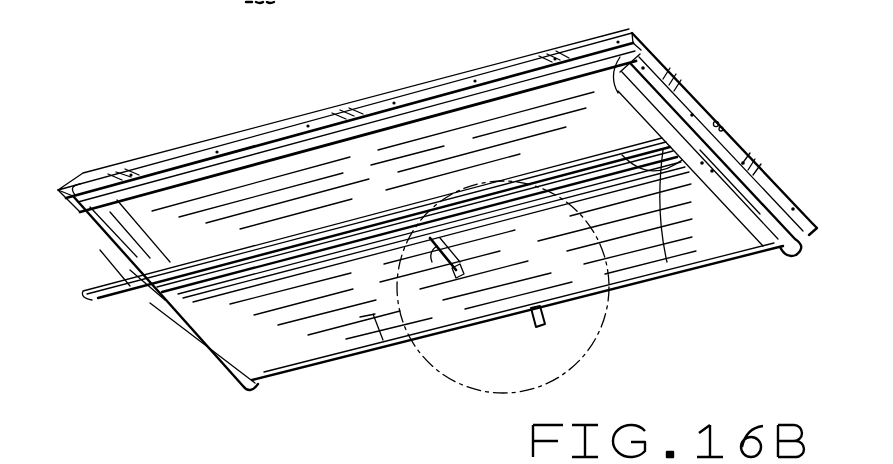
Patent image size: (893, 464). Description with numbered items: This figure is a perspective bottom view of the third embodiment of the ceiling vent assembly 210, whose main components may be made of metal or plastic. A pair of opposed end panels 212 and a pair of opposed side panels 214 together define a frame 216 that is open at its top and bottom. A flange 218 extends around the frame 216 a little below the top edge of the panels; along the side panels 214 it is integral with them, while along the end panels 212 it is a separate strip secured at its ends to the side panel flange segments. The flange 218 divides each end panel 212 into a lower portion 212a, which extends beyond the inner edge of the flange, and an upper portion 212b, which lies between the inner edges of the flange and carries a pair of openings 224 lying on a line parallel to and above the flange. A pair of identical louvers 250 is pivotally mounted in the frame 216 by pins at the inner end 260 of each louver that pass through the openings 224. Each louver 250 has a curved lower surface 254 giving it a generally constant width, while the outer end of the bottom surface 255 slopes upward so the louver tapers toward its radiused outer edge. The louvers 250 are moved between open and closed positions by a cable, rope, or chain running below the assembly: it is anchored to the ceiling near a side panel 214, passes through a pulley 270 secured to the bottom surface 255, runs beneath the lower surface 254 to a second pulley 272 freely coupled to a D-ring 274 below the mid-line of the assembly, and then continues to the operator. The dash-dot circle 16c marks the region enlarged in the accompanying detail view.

The ceiling vent assembly 210 is at (391, 76).
The end panel 212 is at (668, 112).
The lower portion of end panel 212a is at (772, 218).
The upper portion of end panel 212b is at (657, 65).
The side panel 214 is at (303, 131).
The frame 216 is at (542, 55).
The flange 218 is at (163, 173).
The openings 224 is at (722, 122).
The louver 250 is at (140, 310).
The louver lower surface 254 is at (384, 342).
The outer end of louver bottom surface 255 is at (87, 307).
The inner end of louver 260 is at (668, 264).
The pulley 270 is at (543, 326).
The second pulley 272 is at (462, 272).
The D-ring 274 is at (437, 246).
The enlarged detail region 16c is at (604, 347).